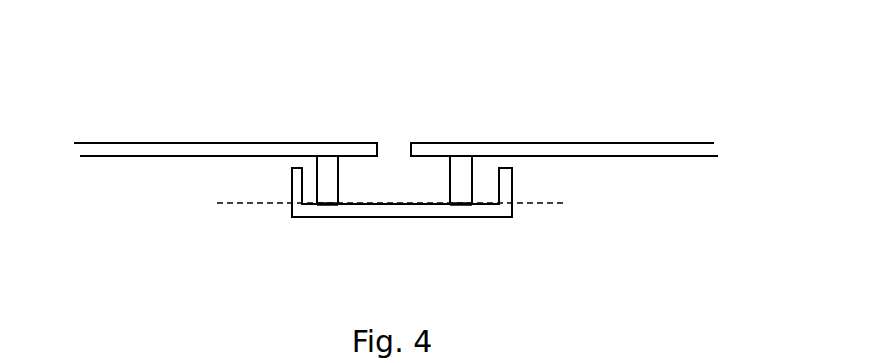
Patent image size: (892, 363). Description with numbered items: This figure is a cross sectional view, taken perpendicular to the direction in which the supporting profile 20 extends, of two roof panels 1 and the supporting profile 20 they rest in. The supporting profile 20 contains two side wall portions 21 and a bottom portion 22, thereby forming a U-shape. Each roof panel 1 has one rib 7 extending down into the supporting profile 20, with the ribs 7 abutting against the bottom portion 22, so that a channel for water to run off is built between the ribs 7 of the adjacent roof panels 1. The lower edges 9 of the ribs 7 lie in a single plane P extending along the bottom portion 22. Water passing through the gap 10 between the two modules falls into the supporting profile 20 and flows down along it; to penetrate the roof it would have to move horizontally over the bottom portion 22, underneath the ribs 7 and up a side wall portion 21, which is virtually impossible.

The roof panel 1 is at (140, 111).
The gap 10 is at (394, 115).
The rib 7 is at (327, 163).
The lower edge 9 is at (337, 206).
The supporting profile 20 is at (328, 241).
The side wall portion 21 is at (295, 190).
The bottom portion 22 is at (422, 210).
The plane P is at (378, 204).